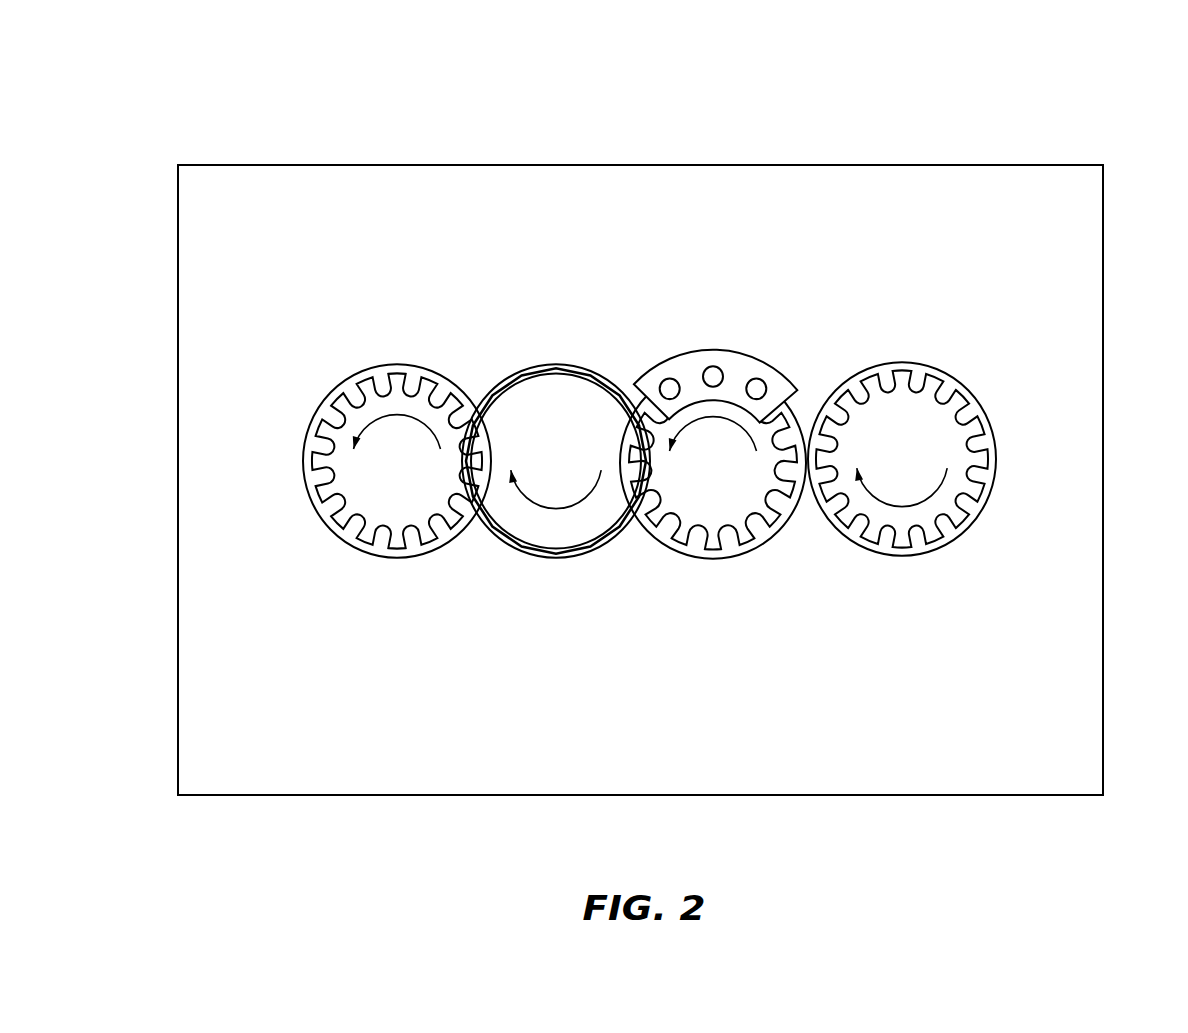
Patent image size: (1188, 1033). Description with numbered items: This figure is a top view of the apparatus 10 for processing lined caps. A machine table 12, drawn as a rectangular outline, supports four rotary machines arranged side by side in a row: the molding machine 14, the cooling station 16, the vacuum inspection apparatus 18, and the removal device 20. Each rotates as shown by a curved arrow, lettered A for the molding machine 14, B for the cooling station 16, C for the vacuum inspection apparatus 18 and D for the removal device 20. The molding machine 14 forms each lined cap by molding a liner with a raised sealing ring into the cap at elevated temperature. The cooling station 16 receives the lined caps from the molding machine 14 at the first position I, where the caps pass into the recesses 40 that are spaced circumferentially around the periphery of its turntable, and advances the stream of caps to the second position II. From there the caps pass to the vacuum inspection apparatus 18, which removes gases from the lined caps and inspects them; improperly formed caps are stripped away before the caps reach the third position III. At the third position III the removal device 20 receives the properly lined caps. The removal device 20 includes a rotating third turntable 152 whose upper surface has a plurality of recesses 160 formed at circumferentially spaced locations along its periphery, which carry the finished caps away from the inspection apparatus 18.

The apparatus 10 is at (1084, 130).
The machine table 12 is at (1103, 303).
The molding machine 14 is at (905, 350).
The cooling station 16 is at (708, 350).
The vacuum inspection apparatus 18 is at (557, 350).
The removal device 20 is at (365, 458).
The recesses 40 is at (713, 451).
The third turntable 152 is at (397, 461).
The recesses 160 is at (397, 460).
The first position I is at (821, 465).
The second position II is at (644, 470).
The third position III is at (485, 507).